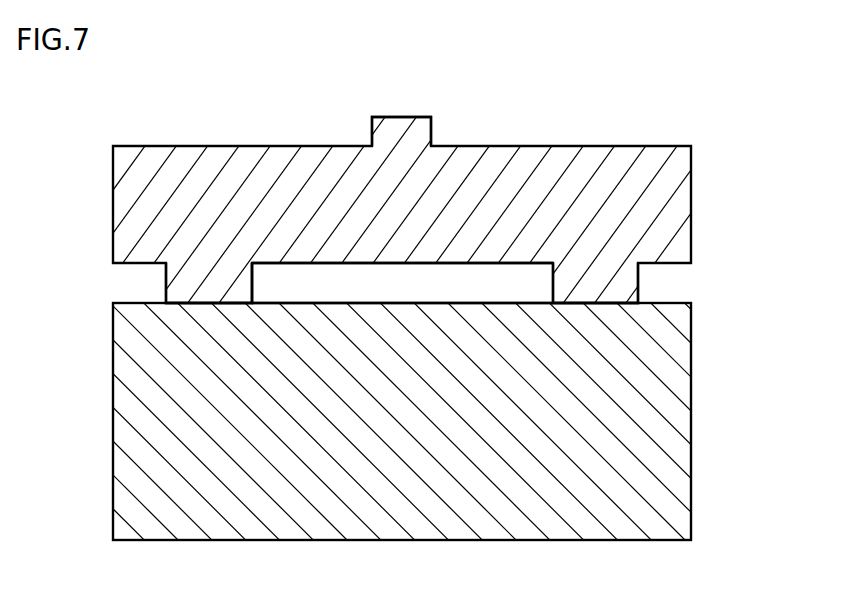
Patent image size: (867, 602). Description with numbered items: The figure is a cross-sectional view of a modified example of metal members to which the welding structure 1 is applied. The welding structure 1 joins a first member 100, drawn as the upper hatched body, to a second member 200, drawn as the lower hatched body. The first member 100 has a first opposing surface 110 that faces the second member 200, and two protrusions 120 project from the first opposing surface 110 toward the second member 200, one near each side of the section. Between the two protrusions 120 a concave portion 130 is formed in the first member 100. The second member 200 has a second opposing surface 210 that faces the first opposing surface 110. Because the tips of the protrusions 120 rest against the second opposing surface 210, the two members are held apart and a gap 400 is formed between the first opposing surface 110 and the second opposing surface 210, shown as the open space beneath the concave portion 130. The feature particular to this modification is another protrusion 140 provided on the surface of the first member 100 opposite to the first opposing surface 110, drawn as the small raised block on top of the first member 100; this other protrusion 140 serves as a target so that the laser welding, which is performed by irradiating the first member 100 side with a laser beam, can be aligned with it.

The welding structure 1 is at (713, 121).
The first member 100 is at (680, 204).
The first opposing surface 110 is at (352, 268).
The protrusion 120 is at (207, 286).
The concave portion 130 is at (253, 284).
The other protrusion 140 is at (401, 127).
The second member 200 is at (680, 427).
The second opposing surface 210 is at (484, 300).
The gap 400 is at (405, 291).